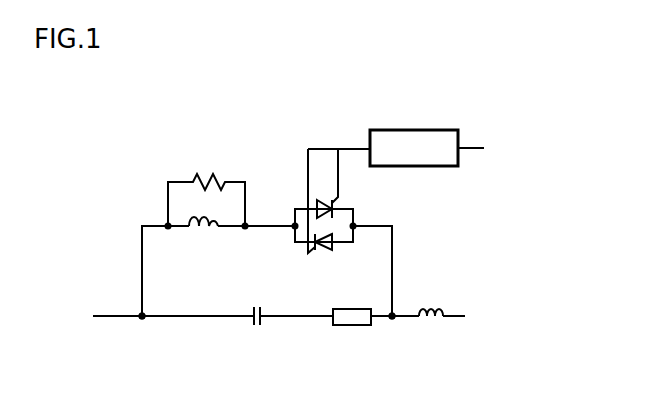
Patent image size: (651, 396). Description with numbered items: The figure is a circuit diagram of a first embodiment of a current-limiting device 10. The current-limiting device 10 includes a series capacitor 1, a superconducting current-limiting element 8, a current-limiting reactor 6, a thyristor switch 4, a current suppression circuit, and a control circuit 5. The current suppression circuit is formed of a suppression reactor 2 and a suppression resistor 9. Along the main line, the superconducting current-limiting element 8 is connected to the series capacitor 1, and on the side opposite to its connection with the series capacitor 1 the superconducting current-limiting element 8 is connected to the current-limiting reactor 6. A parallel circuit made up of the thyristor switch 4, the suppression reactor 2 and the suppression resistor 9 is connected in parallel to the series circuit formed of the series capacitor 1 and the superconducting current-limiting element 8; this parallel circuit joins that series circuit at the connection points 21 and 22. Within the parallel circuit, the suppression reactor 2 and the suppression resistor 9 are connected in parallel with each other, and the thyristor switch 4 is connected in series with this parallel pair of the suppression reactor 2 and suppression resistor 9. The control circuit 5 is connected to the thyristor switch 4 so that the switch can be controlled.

The series capacitor 1 is at (262, 321).
The suppression reactor 2 is at (204, 233).
The thyristor switch 4 is at (340, 249).
The control circuit 5 is at (427, 130).
The current-limiting reactor 6 is at (433, 322).
The superconducting current-limiting element 8 is at (353, 326).
The suppression resistor 9 is at (207, 176).
The current-limiting device 10 is at (521, 100).
The connection point 21 is at (141, 322).
The connection point 22 is at (391, 322).